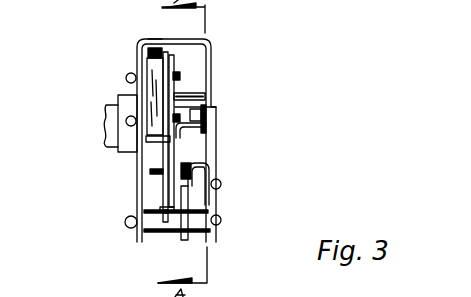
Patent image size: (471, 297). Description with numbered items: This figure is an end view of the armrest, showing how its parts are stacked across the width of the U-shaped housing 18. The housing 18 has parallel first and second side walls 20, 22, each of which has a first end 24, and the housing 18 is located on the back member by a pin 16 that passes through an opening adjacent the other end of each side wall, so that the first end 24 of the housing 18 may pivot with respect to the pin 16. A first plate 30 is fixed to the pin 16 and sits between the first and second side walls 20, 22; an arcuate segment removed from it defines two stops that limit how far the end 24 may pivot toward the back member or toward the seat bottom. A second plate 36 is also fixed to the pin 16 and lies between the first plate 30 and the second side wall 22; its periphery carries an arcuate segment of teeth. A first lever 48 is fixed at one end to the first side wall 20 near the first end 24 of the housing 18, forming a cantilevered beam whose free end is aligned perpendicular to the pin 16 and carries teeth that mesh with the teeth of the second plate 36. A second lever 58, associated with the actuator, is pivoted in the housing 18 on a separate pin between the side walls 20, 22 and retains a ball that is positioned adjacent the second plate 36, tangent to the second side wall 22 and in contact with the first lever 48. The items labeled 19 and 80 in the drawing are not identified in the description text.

The pin 16 is at (216, 134).
The U-shaped housing 18 is at (223, 55).
The top of frame 19 is at (155, 39).
The first side wall 20 is at (138, 178).
The second side wall 22 is at (212, 76).
The first end 24 is at (138, 89).
The first plate 30 is at (149, 53).
The second plate 36 is at (160, 184).
The first lever 48 is at (162, 151).
The second lever 58 is at (189, 206).
The plate 80 is at (209, 101).